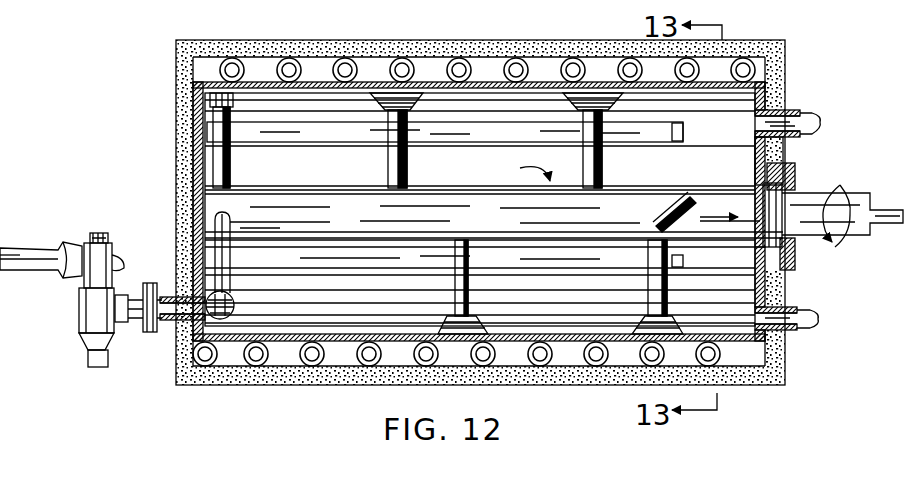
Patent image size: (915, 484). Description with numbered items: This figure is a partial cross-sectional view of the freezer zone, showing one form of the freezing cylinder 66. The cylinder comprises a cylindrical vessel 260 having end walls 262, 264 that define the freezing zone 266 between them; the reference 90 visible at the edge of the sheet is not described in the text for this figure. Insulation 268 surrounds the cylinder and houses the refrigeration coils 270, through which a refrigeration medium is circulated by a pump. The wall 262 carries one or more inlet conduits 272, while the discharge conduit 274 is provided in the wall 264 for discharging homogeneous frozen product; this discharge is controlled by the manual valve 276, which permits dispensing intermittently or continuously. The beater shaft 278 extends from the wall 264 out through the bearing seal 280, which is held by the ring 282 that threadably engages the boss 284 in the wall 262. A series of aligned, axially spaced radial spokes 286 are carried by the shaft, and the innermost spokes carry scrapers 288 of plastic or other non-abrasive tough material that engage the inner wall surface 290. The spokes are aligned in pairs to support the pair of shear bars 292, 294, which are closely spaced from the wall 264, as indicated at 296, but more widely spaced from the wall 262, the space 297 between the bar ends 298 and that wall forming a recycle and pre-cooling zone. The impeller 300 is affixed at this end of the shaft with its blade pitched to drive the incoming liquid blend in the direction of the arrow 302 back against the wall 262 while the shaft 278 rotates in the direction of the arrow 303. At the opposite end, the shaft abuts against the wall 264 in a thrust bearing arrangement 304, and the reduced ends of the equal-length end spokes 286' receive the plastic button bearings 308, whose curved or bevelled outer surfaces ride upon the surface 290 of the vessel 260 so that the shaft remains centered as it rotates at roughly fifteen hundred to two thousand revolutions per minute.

The freezing cylinder 66 is at (258, 38).
The conduit 90 is at (14, 189).
The cylindrical vessel 260 is at (466, 58).
The end wall 262 is at (784, 147).
The end wall 264 is at (180, 266).
The freezing zone 266 is at (277, 316).
The insulation 268 is at (787, 52).
The refrigeration coils 270 is at (533, 68).
The inlet conduit 272 is at (792, 110).
The discharge conduit 274 is at (162, 332).
The manual valve 276 is at (90, 316).
The beater shaft 278 is at (295, 192).
The bearing seal 280 is at (766, 196).
The ring 282 is at (795, 176).
The boss 284 is at (757, 253).
The radial spokes 286 is at (495, 149).
The end spokes 286' is at (255, 147).
The scrapers 288 is at (414, 95).
The inner wall surface 290 is at (316, 95).
The shear bar 292 is at (660, 143).
The shear bar 294 is at (622, 260).
The close spacing 296 is at (208, 133).
The space 297 is at (777, 279).
The bar ends 298 is at (684, 135).
The impeller 300 is at (688, 244).
The arrow 302 is at (664, 205).
The arrow 303 is at (854, 230).
The thrust bearing arrangement 304 is at (207, 193).
The button bearings 308 is at (210, 98).